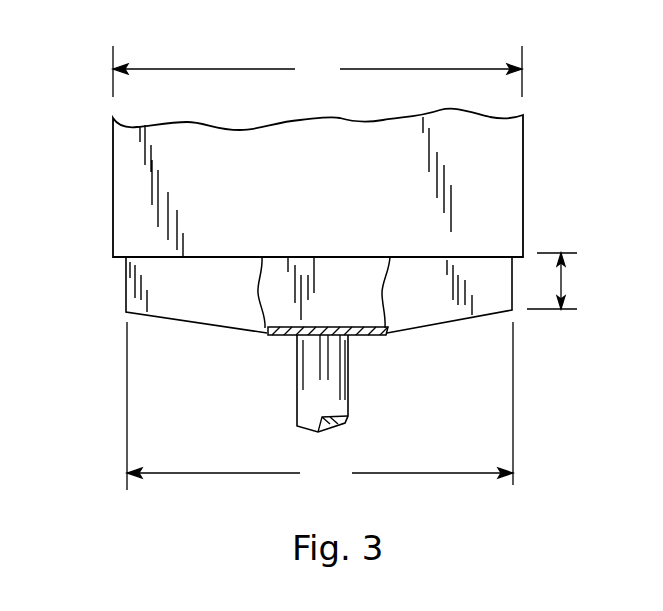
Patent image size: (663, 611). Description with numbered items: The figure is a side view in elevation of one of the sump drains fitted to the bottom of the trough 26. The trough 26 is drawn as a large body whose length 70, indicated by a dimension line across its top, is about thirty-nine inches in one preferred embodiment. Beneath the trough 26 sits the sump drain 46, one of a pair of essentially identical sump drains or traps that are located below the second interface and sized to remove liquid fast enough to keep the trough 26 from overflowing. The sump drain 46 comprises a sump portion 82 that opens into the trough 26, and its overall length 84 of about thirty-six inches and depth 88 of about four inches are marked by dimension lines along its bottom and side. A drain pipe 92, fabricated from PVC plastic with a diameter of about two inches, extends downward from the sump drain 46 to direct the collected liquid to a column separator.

The trough 26 is at (113, 161).
The sump drain 46 is at (126, 300).
The length 70 is at (317, 71).
The sump portion 82 is at (225, 329).
The length 84 is at (320, 406).
The depth 88 is at (561, 283).
The drain pipe 92 is at (348, 402).